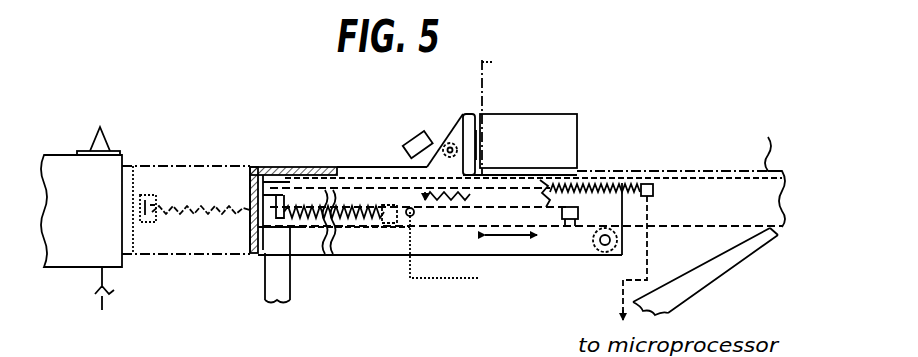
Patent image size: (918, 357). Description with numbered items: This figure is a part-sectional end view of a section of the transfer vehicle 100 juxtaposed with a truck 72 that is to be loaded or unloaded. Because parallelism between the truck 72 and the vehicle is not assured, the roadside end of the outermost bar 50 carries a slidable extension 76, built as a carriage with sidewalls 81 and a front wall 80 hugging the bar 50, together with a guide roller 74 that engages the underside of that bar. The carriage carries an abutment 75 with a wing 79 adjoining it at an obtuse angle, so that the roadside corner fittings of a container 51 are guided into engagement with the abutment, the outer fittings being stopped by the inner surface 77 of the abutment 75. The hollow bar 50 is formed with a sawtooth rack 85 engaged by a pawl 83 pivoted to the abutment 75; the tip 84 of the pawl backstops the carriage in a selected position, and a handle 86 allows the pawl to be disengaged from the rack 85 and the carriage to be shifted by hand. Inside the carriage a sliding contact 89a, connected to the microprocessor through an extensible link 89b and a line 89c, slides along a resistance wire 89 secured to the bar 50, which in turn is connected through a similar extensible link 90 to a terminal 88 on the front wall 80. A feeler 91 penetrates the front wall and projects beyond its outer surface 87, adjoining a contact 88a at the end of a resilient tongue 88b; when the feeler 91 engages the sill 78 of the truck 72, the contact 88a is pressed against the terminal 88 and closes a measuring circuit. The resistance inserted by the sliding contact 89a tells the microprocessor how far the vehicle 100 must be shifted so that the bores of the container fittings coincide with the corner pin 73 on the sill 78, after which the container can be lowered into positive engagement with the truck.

The outermost bar 50 is at (702, 184).
The container 51 is at (484, 100).
The truck 72 is at (110, 291).
The corner pin 73 is at (97, 140).
The guide roller 74 is at (604, 254).
The abutment 75 is at (468, 120).
The slidable extension 76 is at (348, 148).
The inner surface 77 is at (486, 133).
The sill 78 is at (76, 265).
The wing 79 is at (568, 118).
The front wall 80 is at (248, 183).
The sidewall 81 is at (400, 256).
The pawl 83 is at (435, 138).
The tip of pawl 84 is at (405, 158).
The sawtooth rack 85 is at (301, 176).
The handle 86 is at (408, 160).
The outer surface 87 is at (262, 245).
The terminal 88 is at (150, 193).
The contact 88a is at (262, 176).
The resilient tongue 88b is at (250, 222).
The resistance wire 89 is at (475, 225).
The sliding contact 89a is at (542, 183).
The extensible link 89b is at (600, 182).
The line 89c is at (440, 280).
The extensible link 90 is at (185, 212).
The feeler 91 is at (276, 205).
The transfer vehicle 100 is at (725, 275).